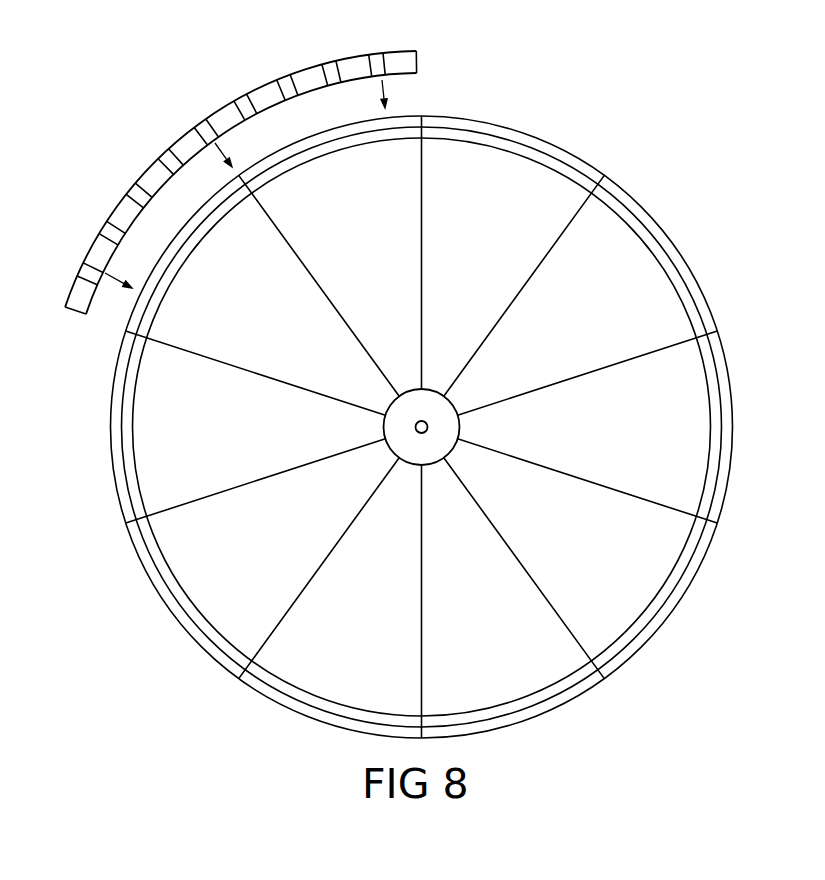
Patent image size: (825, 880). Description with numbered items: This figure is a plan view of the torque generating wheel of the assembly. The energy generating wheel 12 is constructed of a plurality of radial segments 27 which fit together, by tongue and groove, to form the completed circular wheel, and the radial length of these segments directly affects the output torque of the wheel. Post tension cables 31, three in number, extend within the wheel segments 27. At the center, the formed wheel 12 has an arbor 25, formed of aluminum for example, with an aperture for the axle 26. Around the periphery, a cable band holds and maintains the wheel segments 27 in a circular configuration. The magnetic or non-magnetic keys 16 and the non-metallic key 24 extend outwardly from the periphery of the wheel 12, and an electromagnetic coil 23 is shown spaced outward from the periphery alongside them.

The energy generating wheel 12 is at (468, 389).
The keys (magnetic/non-magnetic) 16 is at (675, 240).
The electromagnetic coil 23 is at (155, 172).
The non-metallic key 24 is at (512, 117).
The arbor 25 is at (452, 427).
The axle 26 is at (416, 427).
The radial segments 27 is at (375, 235).
The post tension cables 31 is at (737, 427).